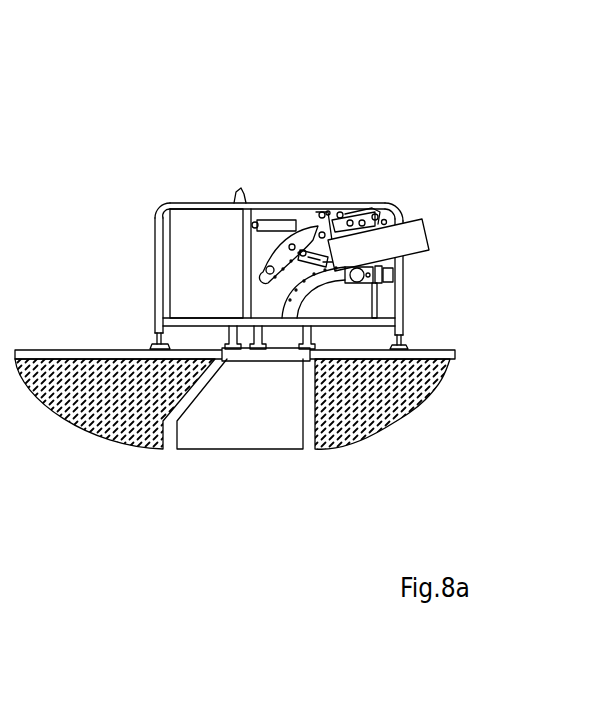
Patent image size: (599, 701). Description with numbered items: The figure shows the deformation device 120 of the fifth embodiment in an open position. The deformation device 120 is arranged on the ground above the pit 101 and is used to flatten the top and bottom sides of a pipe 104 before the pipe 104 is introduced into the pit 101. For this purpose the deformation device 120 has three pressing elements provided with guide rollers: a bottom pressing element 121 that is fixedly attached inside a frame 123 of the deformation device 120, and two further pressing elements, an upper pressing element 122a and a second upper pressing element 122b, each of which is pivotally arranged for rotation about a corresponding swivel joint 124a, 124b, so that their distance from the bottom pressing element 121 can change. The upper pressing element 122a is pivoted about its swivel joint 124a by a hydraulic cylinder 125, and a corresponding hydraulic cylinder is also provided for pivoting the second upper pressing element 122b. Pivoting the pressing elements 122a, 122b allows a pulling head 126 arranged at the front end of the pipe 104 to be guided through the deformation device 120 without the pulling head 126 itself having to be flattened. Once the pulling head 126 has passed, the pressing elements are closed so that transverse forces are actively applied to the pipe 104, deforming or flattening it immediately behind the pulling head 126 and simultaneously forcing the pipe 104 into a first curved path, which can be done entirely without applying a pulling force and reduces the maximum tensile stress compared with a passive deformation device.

The pit 101 is at (198, 385).
The deformation device 120 is at (316, 184).
The upper pressing element 122a is at (283, 252).
The hydraulic cylinder 125 is at (292, 221).
The swivel joint 124a is at (330, 214).
The second upper pressing element 122b is at (363, 212).
The swivel joint 124b is at (378, 214).
The pulling head 126 is at (386, 222).
The pipe 104 is at (410, 238).
The bottom pressing element 121 is at (376, 279).
The frame 123 is at (380, 308).